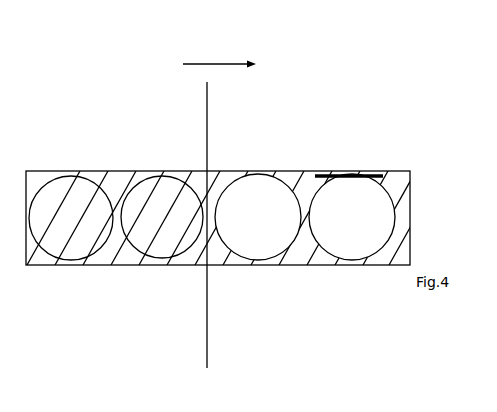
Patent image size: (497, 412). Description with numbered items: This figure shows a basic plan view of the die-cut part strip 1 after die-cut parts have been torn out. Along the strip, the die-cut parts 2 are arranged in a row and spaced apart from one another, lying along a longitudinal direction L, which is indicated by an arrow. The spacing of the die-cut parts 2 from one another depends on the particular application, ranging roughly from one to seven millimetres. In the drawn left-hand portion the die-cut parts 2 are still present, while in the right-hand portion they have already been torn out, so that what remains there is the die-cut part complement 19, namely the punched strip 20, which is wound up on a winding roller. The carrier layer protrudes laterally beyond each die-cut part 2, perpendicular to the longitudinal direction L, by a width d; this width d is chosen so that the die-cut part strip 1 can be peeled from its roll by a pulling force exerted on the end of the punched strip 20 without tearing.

The die-cut part strip 1 is at (142, 287).
The die-cut part 2 is at (56, 213).
The die-cut part complement 19 is at (115, 264).
The punched strip 20 is at (306, 287).
The width d is at (383, 173).
The longitudinal direction L is at (219, 55).